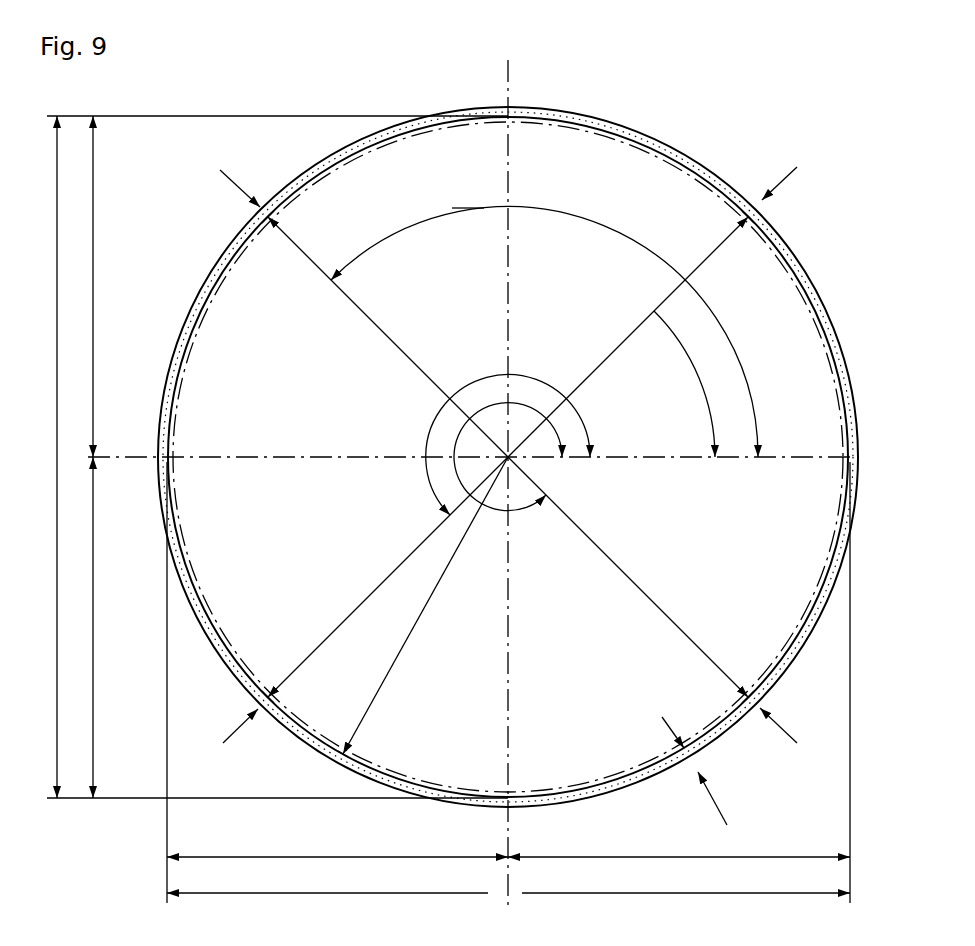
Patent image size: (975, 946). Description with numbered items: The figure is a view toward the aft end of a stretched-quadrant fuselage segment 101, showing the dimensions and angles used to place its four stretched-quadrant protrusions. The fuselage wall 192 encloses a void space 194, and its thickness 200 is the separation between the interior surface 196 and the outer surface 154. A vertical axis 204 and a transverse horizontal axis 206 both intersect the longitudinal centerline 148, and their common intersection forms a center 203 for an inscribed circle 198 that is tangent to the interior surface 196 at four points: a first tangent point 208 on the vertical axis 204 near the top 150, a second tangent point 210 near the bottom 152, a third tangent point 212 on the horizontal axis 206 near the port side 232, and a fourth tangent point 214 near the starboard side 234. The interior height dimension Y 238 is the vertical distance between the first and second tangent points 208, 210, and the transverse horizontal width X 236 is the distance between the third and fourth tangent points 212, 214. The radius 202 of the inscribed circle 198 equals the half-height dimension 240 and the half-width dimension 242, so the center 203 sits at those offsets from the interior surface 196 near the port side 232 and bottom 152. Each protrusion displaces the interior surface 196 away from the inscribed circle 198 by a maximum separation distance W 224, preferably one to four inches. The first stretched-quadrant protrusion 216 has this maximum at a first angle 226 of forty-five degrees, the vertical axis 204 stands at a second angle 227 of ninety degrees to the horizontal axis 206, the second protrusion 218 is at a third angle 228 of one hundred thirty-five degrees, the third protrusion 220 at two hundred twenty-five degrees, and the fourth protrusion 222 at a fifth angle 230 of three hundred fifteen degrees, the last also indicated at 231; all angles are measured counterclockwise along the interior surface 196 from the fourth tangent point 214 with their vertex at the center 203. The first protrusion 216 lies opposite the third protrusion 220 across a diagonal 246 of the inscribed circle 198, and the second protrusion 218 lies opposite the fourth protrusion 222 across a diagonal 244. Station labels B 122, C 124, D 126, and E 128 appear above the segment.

The stretched-quadrant fuselage segment 101 is at (684, 138).
The position B 122 is at (457, 62).
The position C 124 is at (576, 62).
The position D 126 is at (685, 62).
The position E 128 is at (802, 62).
The longitudinal centerline 148 is at (512, 459).
The top of the fuselage 150 is at (508, 107).
The bottom of the fuselage 152 is at (508, 798).
The outer surface 154 is at (820, 278).
The fuselage wall 192 is at (853, 382).
The void space 194 is at (590, 743).
The interior surface 196 is at (812, 300).
The inscribed circle 198 is at (295, 190).
The thickness of the fuselage wall 200 is at (717, 810).
The radius of the inscribed circle 202 is at (449, 565).
The center 203 is at (507, 457).
The vertical axis 204 is at (505, 147).
The transverse horizontal axis 206 is at (222, 457).
The first tangent point 208 is at (508, 107).
The second tangent point 210 is at (508, 797).
The third tangent point 212 is at (167, 457).
The fourth tangent point 214 is at (848, 457).
The first stretched-quadrant protrusion 216 is at (758, 183).
The second stretched-quadrant protrusion 218 is at (260, 236).
The third stretched-quadrant protrusion 220 is at (264, 684).
The fourth stretched-quadrant protrusion 222 is at (757, 673).
The maximum separation distance W 224 is at (250, 198).
The angle A1 226 is at (632, 340).
The angle A2 227 is at (650, 308).
The angle A3 228 is at (379, 240).
The angle A5 230 is at (427, 447).
The angle A5 231 is at (517, 513).
The port side 232 is at (146, 468).
The starboard side 234 is at (880, 465).
The transverse horizontal width X 236 is at (433, 893).
The interior height dimension Y 238 is at (259, 457).
The half interior vertical dimension Y/2 240 is at (93, 768).
The half interior transverse horizontal dimension X/2 242 is at (280, 856).
The diagonal 244 is at (679, 628).
The diagonal 246 is at (380, 585).